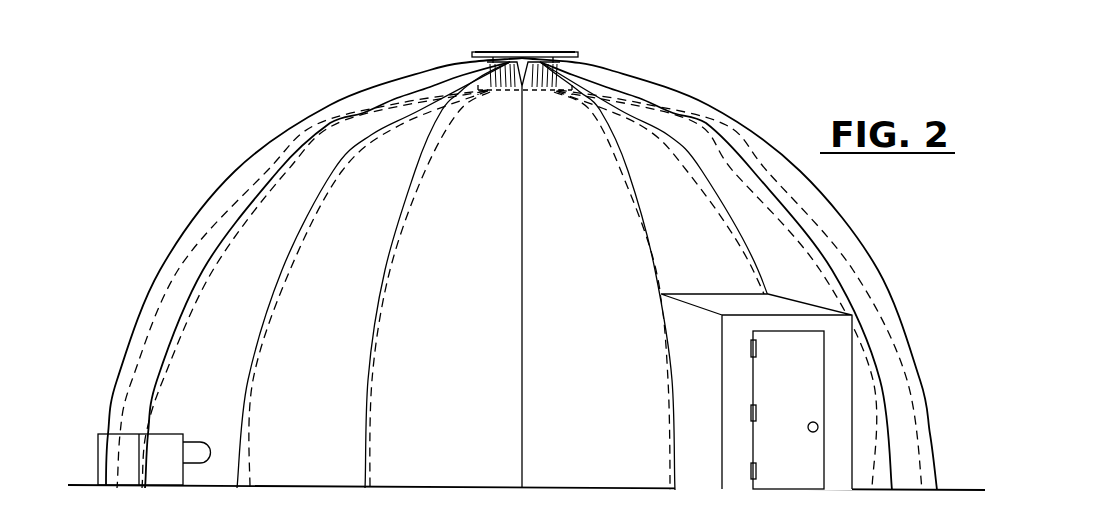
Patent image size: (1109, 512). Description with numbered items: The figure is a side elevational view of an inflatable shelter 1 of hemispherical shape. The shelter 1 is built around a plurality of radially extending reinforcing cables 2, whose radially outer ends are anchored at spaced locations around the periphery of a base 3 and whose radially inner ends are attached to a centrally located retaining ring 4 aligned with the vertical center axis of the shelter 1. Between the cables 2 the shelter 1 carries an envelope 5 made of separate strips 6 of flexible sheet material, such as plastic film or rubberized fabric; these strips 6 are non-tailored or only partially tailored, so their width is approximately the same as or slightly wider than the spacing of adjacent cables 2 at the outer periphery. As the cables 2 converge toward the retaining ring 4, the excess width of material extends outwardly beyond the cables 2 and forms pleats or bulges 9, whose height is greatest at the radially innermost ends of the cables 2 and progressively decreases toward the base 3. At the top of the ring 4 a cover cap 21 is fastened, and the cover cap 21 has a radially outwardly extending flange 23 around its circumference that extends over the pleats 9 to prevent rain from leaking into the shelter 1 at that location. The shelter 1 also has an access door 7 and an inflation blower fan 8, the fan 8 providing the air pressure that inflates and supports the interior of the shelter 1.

The shelter 1 is at (737, 120).
The reinforcing cables 2 is at (198, 247).
The base 3 is at (581, 488).
The retaining ring 4 is at (576, 52).
The envelope 5 is at (235, 183).
The strips 6 is at (317, 395).
The access door 7 is at (808, 365).
The inflation blower fan 8 is at (127, 457).
The pleats 9 is at (443, 107).
The cover cap 21 is at (528, 51).
The flange 23 is at (478, 52).